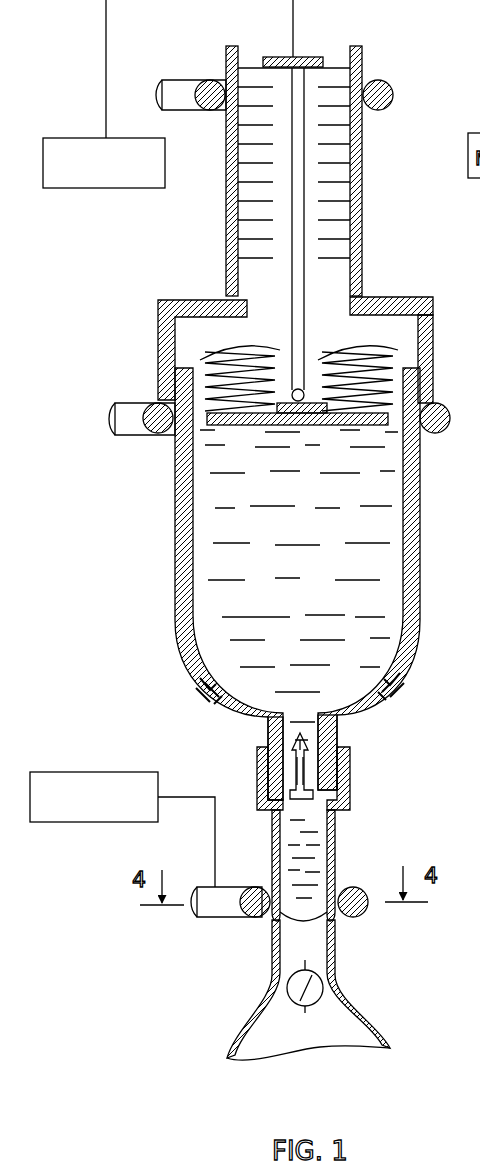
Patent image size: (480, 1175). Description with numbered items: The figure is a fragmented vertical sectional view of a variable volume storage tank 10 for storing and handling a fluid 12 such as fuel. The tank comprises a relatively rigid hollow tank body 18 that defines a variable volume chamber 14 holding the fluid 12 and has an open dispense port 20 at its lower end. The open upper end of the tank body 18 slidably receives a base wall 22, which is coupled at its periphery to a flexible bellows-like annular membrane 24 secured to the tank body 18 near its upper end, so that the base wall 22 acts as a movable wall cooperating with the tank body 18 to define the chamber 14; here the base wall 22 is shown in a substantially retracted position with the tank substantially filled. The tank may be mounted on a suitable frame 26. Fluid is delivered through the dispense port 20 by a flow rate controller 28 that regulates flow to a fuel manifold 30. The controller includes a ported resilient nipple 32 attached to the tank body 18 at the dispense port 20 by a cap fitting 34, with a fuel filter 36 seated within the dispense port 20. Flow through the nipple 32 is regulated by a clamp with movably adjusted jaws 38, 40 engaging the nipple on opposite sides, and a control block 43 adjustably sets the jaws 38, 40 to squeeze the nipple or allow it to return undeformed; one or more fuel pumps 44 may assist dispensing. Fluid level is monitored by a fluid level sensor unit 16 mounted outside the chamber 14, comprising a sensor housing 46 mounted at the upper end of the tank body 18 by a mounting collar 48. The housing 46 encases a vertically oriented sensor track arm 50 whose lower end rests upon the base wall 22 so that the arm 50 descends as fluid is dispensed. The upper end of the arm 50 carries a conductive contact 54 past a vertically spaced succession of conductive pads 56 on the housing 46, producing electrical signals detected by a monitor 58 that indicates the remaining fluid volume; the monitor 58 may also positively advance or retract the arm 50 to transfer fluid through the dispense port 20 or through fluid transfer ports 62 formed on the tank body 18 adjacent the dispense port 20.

The storage tank 10 is at (146, 587).
The fluid 12 is at (222, 522).
The variable volume chamber 14 is at (382, 590).
The fluid level sensor unit 16 is at (211, 248).
The tank body 18 is at (177, 583).
The dispense port 20 is at (268, 728).
The base wall 22 is at (250, 430).
The annular membrane 24 is at (378, 350).
The frame 26 is at (388, 82).
The flow rate controller 28 is at (202, 934).
The fuel manifold 30 is at (375, 1016).
The resilient nipple 32 is at (337, 848).
The cap fitting 34 is at (350, 785).
The fuel filter 36 is at (312, 748).
The clamp jaw 38 is at (261, 919).
The clamp jaw 40 is at (355, 918).
The control block 43 is at (60, 822).
The fuel pump 44 is at (300, 1006).
The sensor housing 46 is at (362, 203).
The mounting collar 48 is at (390, 300).
The sensor track arm 50 is at (310, 312).
The conductive contact 54 is at (312, 57).
The conductive pads 56 is at (248, 174).
The monitor 58 is at (93, 138).
The fluid transfer ports 62 is at (313, 427).